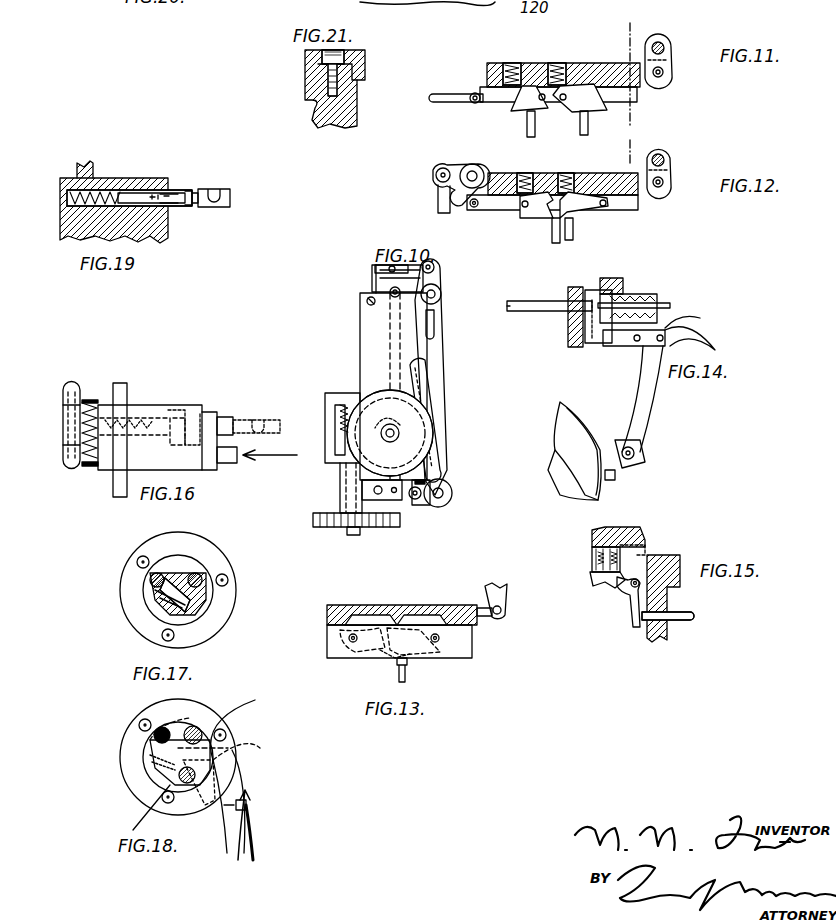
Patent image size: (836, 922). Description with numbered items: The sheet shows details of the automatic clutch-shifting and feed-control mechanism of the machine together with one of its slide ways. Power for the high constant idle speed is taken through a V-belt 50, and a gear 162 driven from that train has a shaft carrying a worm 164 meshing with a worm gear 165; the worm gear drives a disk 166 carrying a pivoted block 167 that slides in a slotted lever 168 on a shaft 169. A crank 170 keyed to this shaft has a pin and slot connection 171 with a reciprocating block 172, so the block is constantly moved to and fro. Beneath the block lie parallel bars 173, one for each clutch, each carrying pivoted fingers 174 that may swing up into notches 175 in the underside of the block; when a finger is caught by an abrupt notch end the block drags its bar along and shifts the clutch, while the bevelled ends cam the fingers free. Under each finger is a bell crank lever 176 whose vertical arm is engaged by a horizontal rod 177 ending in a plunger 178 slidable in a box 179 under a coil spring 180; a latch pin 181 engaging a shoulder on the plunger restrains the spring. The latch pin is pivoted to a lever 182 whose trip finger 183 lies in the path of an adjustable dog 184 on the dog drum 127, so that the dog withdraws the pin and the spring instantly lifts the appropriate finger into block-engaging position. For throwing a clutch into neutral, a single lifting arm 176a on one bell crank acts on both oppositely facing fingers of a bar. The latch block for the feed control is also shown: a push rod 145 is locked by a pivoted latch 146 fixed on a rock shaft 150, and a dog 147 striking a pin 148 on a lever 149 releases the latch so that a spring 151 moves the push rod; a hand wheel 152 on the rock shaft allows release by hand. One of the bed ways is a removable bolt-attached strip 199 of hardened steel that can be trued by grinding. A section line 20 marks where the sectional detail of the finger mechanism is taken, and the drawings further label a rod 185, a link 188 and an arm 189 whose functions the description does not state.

In FIG. 11, the section line 20 is at (629, 65).
In FIG. 12, the section line 20 is at (631, 149).
In FIG. 16, the V-belt 50 is at (67, 430).
In FIG. 14, the dog drum 127 is at (580, 410).
In FIG. 19, the push rod 145 is at (160, 182).
In FIG. 17, the push rod 145 is at (150, 585).
In FIG. 18, the push rod 145 is at (158, 745).
In FIG. 16, the latch 146 is at (180, 410).
In FIG. 17, the latch 146 is at (185, 568).
In FIG. 18, the latch 146 is at (160, 715).
In FIG. 18, the dog 147 is at (200, 778).
In FIG. 16, the pin 148 is at (232, 460).
In FIG. 18, the pin 148 is at (182, 780).
In FIG. 18, the lever 149 is at (205, 748).
In FIG. 17, the rock shaft 150 is at (205, 580).
In FIG. 18, the rock shaft 150 is at (200, 730).
In FIG. 19, the spring 151 is at (107, 190).
In FIG. 16, the spring 151 is at (140, 418).
In FIG. 16, the hand wheel 152 is at (68, 385).
In FIG. 10, the gear 162 is at (378, 528).
In FIG. 10, the worm 164 is at (338, 465).
In FIG. 10, the worm gear 165 is at (375, 380).
In FIG. 10, the disk 166 is at (390, 433).
In FIG. 10, the pivoted block 167 is at (432, 430).
In FIG. 10, the slotted lever 168 is at (432, 392).
In FIG. 11, the shaft 169 is at (665, 42).
In FIG. 12, the shaft 169 is at (670, 158).
In FIG. 10, the shaft 169 is at (452, 485).
In FIG. 11, the crank 170 is at (666, 49).
In FIG. 12, the crank 170 is at (665, 160).
In FIG. 10, the crank 170 is at (420, 500).
In FIG. 11, the pin and slot connection 171 is at (664, 72).
In FIG. 12, the pin and slot connection 171 is at (658, 190).
In FIG. 10, the pin and slot connection 171 is at (418, 500).
In FIG. 13, the pin and slot connection 171 is at (498, 620).
In FIG. 11, the reciprocating block 172 is at (598, 63).
In FIG. 12, the reciprocating block 172 is at (522, 167).
In FIG. 10, the reciprocating block 172 is at (438, 353).
In FIG. 14, the reciprocating block 172 is at (664, 500).
In FIG. 15, the reciprocating block 172 is at (635, 521).
In FIG. 13, the reciprocating block 172 is at (390, 613).
In FIG. 11, the bars 173 is at (579, 98).
In FIG. 12, the bars 173 is at (505, 210).
In FIG. 10, the bars 173 is at (385, 282).
In FIG. 15, the bars 173 is at (640, 545).
In FIG. 13, the bars 173 is at (340, 655).
In FIG. 11, the fingers 174 is at (585, 100).
In FIG. 12, the fingers 174 is at (530, 215).
In FIG. 15, the fingers 174 is at (600, 585).
In FIG. 11, the notches 175 is at (512, 63).
In FIG. 11, the bell crank lever 176 is at (537, 132).
In FIG. 12, the bell crank lever 176 is at (560, 242).
In FIG. 15, the bell crank lever 176 is at (631, 608).
In FIG. 13, the bell crank lever 176 is at (407, 668).
In FIG. 13, the lifting arm 176a is at (440, 660).
In FIG. 14, the horizontal rod 177 is at (526, 296).
In FIG. 15, the horizontal rod 177 is at (680, 612).
In FIG. 14, the plunger 178 is at (620, 295).
In FIG. 14, the box 179 is at (655, 300).
In FIG. 14, the coil spring 180 is at (600, 344).
In FIG. 14, the latch pin 181 is at (580, 328).
In FIG. 14, the lever 182 is at (648, 362).
In FIG. 14, the trip finger 183 is at (640, 454).
In FIG. 14, the dog 184 is at (620, 450).
In FIG. 11, the rod 185 is at (445, 93).
In FIG. 12, the link 188 is at (455, 163).
In FIG. 12, the arm 189 is at (439, 210).
In FIG. 10, the arm 189 is at (373, 268).
In FIG. 21, the strip 199 is at (303, 65).